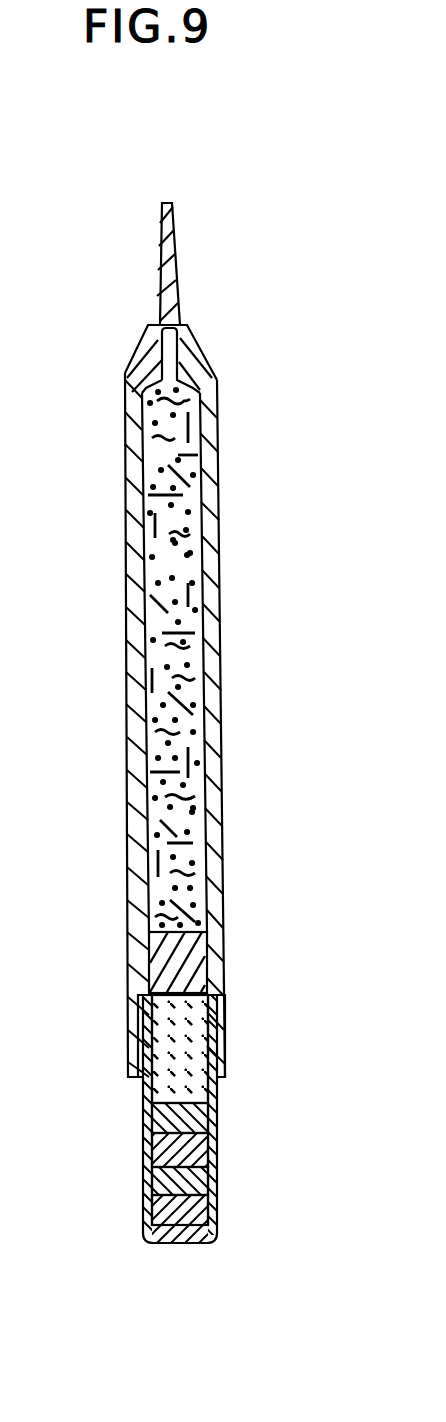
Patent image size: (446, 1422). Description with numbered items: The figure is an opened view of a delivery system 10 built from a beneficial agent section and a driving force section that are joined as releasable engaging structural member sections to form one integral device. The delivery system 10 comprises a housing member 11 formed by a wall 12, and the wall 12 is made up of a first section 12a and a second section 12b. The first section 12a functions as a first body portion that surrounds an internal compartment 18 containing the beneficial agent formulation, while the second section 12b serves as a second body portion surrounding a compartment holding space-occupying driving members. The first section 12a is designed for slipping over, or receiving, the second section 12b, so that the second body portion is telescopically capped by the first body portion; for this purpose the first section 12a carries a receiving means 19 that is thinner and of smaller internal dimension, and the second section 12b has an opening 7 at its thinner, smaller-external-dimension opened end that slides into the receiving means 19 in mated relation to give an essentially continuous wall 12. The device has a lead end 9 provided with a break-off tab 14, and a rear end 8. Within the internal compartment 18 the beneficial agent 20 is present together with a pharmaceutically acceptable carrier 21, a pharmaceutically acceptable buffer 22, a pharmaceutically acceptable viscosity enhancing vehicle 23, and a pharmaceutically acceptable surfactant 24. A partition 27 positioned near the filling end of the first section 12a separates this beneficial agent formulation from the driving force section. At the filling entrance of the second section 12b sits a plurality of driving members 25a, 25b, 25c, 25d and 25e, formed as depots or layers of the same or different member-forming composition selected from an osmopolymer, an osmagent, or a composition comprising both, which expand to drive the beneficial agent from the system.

The opening 7 is at (227, 999).
The rear end 8 is at (177, 1245).
The lead end 9 is at (187, 325).
The delivery system 10 is at (276, 368).
The housing member 11 is at (217, 487).
The wall 12 is at (209, 548).
The first section 12a is at (218, 693).
The second section 12b is at (219, 1130).
The break-off tab 14 is at (176, 212).
The internal compartment 18 is at (215, 453).
The receiving means 19 is at (227, 1068).
The beneficial agent 20 is at (150, 456).
The pharmaceutically acceptable carrier 21 is at (153, 548).
The pharmaceutically acceptable buffer 22 is at (160, 628).
The pharmaceutically acceptable viscosity enhancing vehicle 23 is at (153, 668).
The pharmaceutically acceptable surfactant 24 is at (153, 830).
The driving member 25a is at (151, 1213).
The driving member 25b is at (151, 1195).
The driving member 25c is at (151, 1155).
The driving member 25d is at (151, 1118).
The driving member 25e is at (152, 1056).
The partition 27 is at (150, 965).